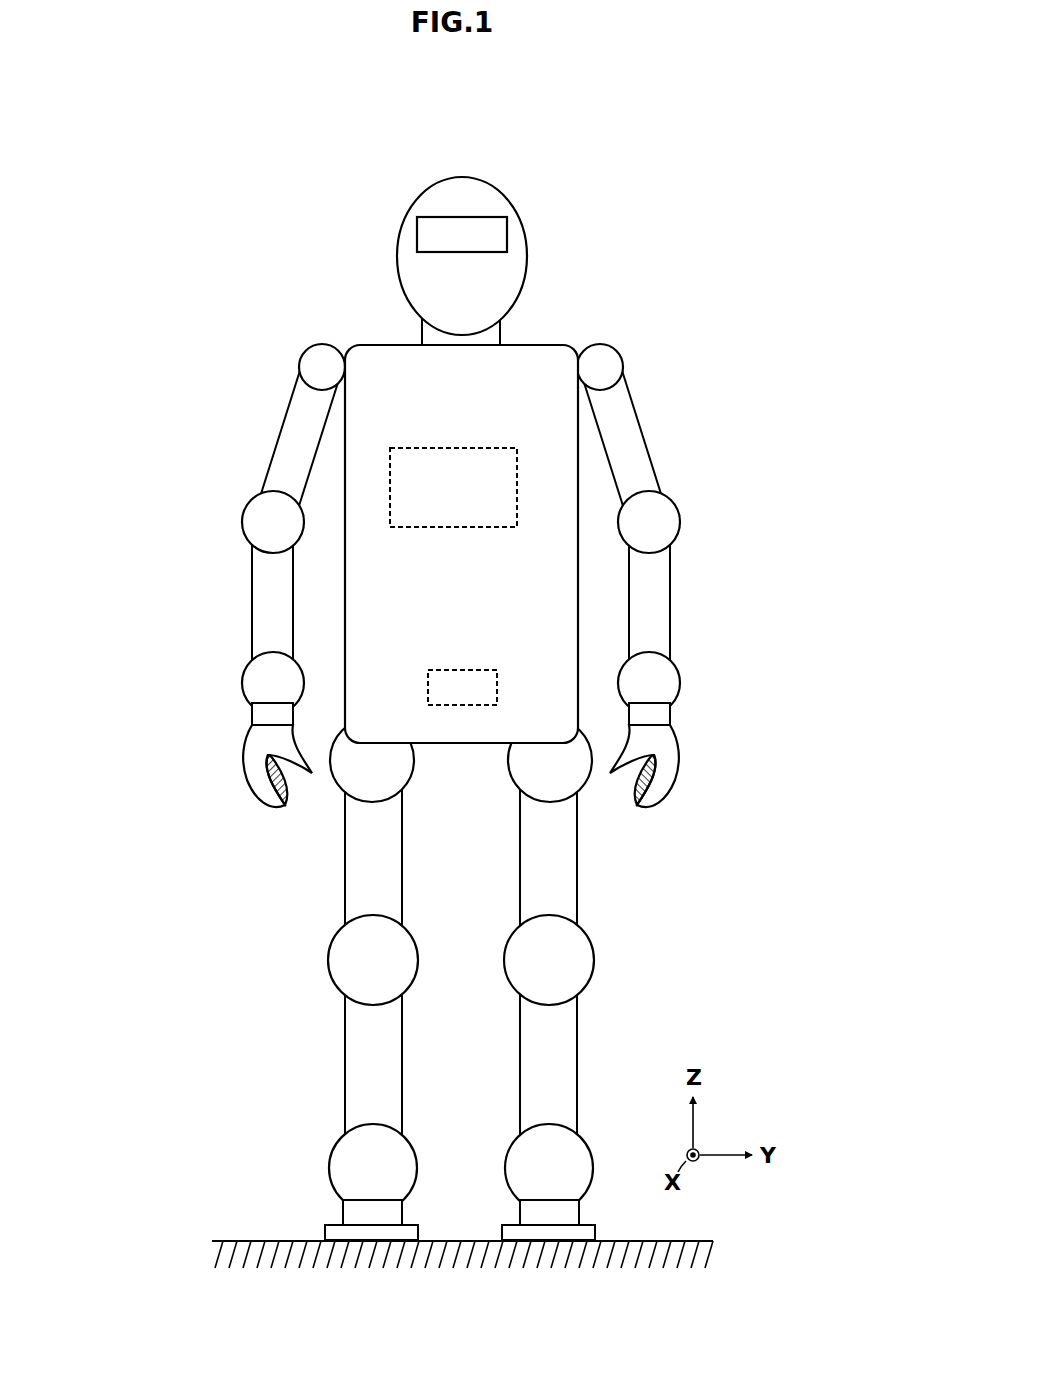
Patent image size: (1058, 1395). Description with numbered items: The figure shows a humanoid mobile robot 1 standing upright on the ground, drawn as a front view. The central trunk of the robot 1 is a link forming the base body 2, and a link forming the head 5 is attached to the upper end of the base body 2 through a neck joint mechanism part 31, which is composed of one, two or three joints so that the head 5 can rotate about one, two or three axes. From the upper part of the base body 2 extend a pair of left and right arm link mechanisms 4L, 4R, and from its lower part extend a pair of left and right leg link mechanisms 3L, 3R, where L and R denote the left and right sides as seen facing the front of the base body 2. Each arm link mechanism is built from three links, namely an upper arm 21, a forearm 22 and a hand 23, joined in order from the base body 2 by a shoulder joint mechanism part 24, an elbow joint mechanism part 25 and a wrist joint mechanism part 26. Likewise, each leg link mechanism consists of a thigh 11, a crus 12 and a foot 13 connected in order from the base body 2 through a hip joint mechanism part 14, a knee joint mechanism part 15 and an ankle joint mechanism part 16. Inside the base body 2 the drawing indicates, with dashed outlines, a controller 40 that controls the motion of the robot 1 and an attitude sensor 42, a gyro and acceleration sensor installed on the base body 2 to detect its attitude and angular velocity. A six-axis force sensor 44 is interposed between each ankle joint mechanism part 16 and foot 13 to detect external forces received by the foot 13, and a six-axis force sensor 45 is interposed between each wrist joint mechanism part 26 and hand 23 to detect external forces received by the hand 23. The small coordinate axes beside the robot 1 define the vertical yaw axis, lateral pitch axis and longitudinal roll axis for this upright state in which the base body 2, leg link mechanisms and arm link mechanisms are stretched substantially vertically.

The mobile robot 1 is at (628, 230).
The base body 2 is at (532, 352).
The head 5 is at (485, 198).
The neck joint mechanism part 31 is at (430, 334).
The right leg link mechanism 3R is at (305, 918).
The left leg link mechanism 3L is at (612, 918).
The right arm link mechanism 4R is at (226, 567).
The left arm link mechanism 4L is at (697, 562).
The thigh 11 is at (360, 886).
The crus 12 is at (360, 1060).
The foot 13 is at (333, 1233).
The hip joint mechanism part 14 is at (356, 770).
The knee joint mechanism part 15 is at (344, 967).
The ankle joint mechanism part 16 is at (344, 1152).
The upper arm 21 is at (300, 440).
The forearm 22 is at (266, 626).
The hand 23 is at (254, 762).
The shoulder joint mechanism part 24 is at (316, 366).
The elbow joint mechanism part 25 is at (258, 518).
The wrist joint mechanism part 26 is at (258, 685).
The controller 40 is at (462, 448).
The attitude sensor 42 is at (462, 670).
The force sensor 44 is at (352, 1212).
The force sensor 45 is at (258, 716).